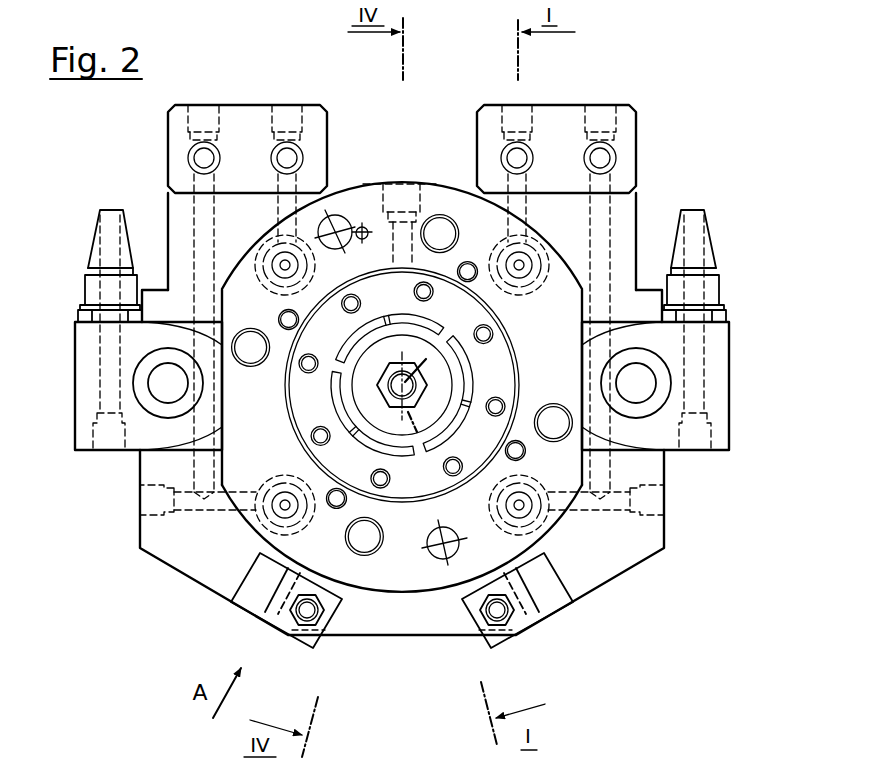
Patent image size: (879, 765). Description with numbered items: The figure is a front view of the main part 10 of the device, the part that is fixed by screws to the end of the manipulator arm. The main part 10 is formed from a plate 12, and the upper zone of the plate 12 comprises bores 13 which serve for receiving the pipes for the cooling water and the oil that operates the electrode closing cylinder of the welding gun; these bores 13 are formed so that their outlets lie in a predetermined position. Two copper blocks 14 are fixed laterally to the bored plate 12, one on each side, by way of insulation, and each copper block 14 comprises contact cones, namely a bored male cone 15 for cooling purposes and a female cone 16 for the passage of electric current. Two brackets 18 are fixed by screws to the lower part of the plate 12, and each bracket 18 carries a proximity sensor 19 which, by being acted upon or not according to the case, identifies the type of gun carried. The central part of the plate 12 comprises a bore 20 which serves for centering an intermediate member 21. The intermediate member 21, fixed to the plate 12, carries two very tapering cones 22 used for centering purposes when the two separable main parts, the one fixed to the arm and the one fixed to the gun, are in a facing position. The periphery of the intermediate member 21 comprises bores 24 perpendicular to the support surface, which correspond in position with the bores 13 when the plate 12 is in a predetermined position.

The main part 10 is at (657, 118).
The plate 12 is at (627, 227).
The bores 13 is at (202, 117).
The copper blocks 14 is at (88, 358).
The bored male cone 15 is at (98, 247).
The female cone 16 is at (148, 388).
The brackets 18 is at (291, 628).
The proximity sensor 19 is at (312, 617).
The bore 20 is at (373, 400).
The intermediate member 21 is at (432, 197).
The tapering cones 22 is at (336, 215).
The bores 24 is at (490, 297).